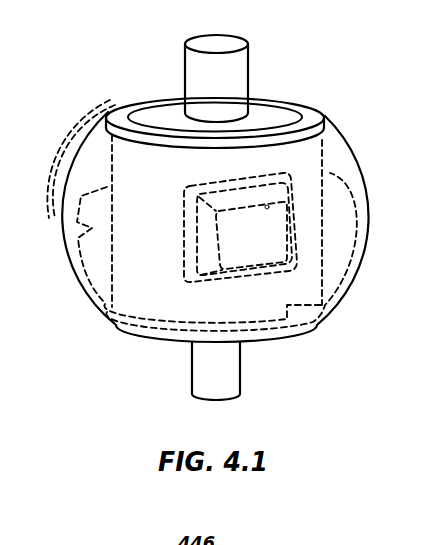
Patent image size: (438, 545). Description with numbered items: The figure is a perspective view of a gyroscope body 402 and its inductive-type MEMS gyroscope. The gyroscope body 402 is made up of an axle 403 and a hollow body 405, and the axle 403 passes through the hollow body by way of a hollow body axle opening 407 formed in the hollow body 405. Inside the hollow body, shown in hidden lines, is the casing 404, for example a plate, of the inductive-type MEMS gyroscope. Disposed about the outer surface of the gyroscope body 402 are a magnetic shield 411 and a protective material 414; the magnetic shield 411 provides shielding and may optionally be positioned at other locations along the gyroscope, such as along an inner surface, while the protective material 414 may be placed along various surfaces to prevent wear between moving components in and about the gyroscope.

The gyroscope body 402 is at (343, 316).
The axle 403 is at (241, 372).
The casing 404 is at (279, 250).
The hollow body 405 is at (341, 302).
The hollow body axle opening 407 is at (326, 118).
The magnetic shield 411 is at (55, 218).
The protective material 414 is at (80, 137).